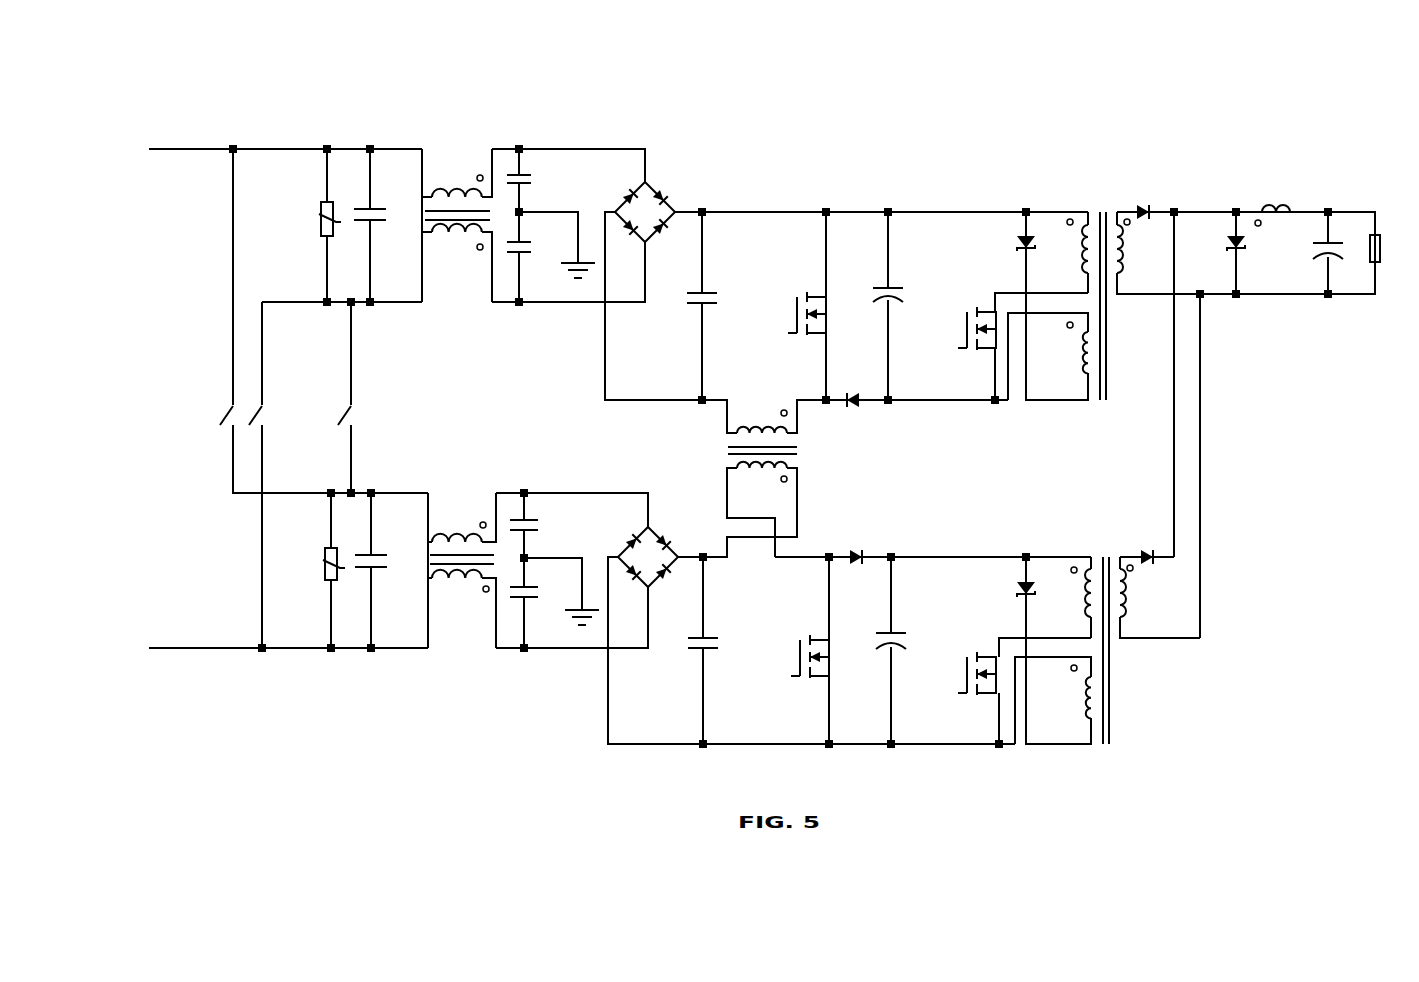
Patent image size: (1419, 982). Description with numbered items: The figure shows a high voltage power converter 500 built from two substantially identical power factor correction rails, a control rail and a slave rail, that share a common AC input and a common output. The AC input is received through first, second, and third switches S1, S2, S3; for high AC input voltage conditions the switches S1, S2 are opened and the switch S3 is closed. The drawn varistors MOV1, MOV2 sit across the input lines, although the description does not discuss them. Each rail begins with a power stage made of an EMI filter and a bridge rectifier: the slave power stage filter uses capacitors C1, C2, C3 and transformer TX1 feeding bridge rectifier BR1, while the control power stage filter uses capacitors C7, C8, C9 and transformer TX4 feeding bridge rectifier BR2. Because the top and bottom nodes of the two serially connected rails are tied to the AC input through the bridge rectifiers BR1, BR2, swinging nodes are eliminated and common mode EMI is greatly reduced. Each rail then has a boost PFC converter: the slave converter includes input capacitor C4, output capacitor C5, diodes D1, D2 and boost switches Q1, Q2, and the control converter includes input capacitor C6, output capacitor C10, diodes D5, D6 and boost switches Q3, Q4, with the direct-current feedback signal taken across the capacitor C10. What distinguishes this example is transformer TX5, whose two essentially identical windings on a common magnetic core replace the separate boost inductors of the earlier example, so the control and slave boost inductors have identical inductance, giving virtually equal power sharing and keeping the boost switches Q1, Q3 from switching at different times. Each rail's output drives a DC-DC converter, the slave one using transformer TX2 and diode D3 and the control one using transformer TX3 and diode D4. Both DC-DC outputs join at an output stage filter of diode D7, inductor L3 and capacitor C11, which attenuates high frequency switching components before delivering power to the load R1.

The power converter 500 is at (272, 73).
The first switch S1 is at (218, 287).
The second switch S2 is at (272, 363).
The third switch S3 is at (357, 363).
The metal oxide varistor MOV1 is at (298, 225).
The metal oxide varistor MOV2 is at (309, 570).
The capacitor C1 is at (377, 225).
The capacitor C2 is at (536, 180).
The capacitor C3 is at (551, 257).
The input capacitor C4 is at (716, 306).
The output capacitor C5 is at (902, 306).
The input capacitor C6 is at (716, 650).
The capacitor C7 is at (377, 570).
The capacitor C8 is at (540, 525).
The capacitor C9 is at (554, 603).
The output capacitor C10 is at (910, 650).
The capacitor C11 is at (1316, 253).
The transformer TX1 is at (457, 225).
The transformer TX2 is at (1098, 294).
The transformer TX3 is at (1101, 639).
The transformer TX4 is at (462, 570).
The transformer TX5 is at (740, 451).
The bridge rectifier BR1 is at (662, 212).
The bridge rectifier BR2 is at (664, 557).
The boost switch Q1 is at (807, 306).
The boost switch Q2 is at (977, 347).
The boost switch Q3 is at (810, 650).
The boost switch Q4 is at (977, 691).
The diode D1 is at (855, 386).
The diode D2 is at (1014, 242).
The diode D3 is at (1144, 199).
The diode D4 is at (1148, 544).
The diode D5 is at (861, 544).
The diode D6 is at (1014, 588).
The diode D7 is at (1223, 253).
The inductor L3 is at (1272, 222).
The load R1 is at (1389, 253).